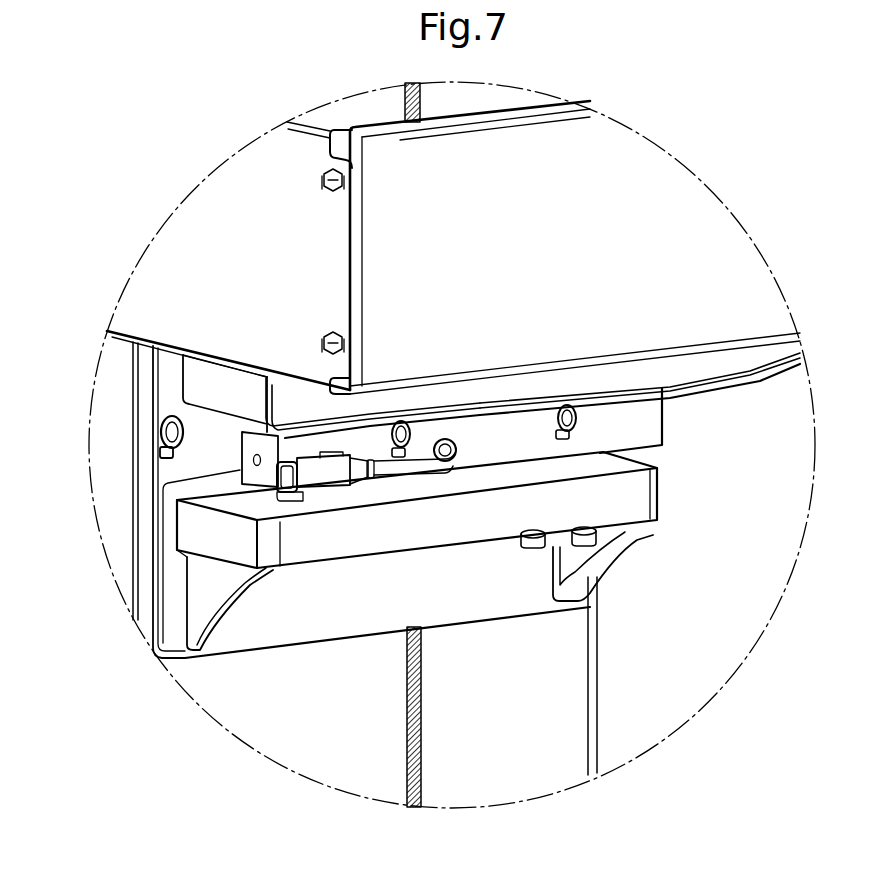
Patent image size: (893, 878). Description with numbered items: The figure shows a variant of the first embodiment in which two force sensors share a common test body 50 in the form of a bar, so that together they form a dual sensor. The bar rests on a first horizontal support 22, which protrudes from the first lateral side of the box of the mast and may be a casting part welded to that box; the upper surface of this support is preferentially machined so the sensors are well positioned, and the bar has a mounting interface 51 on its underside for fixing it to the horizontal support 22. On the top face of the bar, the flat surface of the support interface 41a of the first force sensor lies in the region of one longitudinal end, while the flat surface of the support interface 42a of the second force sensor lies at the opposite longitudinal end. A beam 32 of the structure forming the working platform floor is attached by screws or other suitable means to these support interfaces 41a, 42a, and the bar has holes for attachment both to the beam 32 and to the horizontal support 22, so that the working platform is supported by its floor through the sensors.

The first horizontal support 22 is at (307, 545).
The beam 32 is at (217, 390).
The support interface 41a is at (295, 414).
The support interface 42a is at (640, 405).
The test body 50 is at (503, 437).
The mounting interface 51 is at (488, 486).